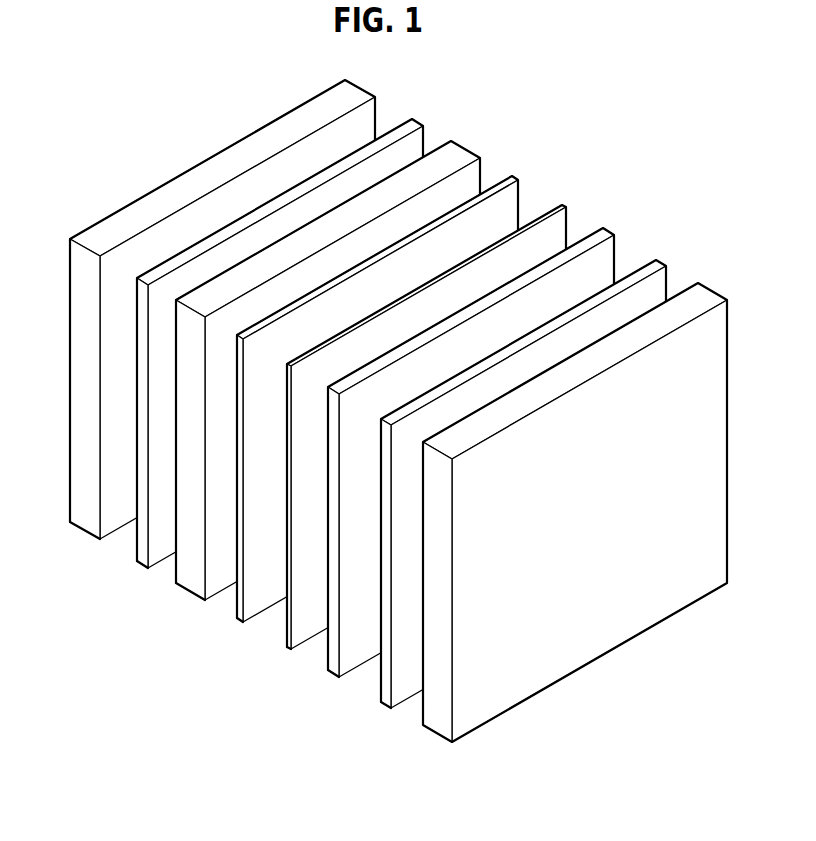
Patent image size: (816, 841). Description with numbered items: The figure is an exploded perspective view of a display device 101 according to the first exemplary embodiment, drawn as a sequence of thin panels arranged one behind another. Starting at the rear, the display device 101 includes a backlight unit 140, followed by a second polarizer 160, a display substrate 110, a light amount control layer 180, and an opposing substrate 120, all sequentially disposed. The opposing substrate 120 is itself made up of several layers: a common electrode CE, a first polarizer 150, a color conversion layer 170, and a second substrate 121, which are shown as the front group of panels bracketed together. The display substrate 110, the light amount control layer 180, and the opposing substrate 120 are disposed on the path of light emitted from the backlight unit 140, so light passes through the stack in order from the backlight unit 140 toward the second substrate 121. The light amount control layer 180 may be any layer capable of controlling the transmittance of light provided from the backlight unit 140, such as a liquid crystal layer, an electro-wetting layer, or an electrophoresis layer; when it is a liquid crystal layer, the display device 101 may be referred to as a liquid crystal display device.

The display device 101 is at (135, 115).
The backlight unit 140 is at (88, 517).
The second polarizer 160 is at (143, 558).
The display substrate 110 is at (192, 587).
The light amount control layer 180 is at (238, 625).
The common electrode CE is at (287, 650).
The first polarizer 150 is at (333, 678).
The color conversion layer 170 is at (498, 513).
The opposing substrate 120 is at (446, 501).
The second substrate 121 is at (433, 730).